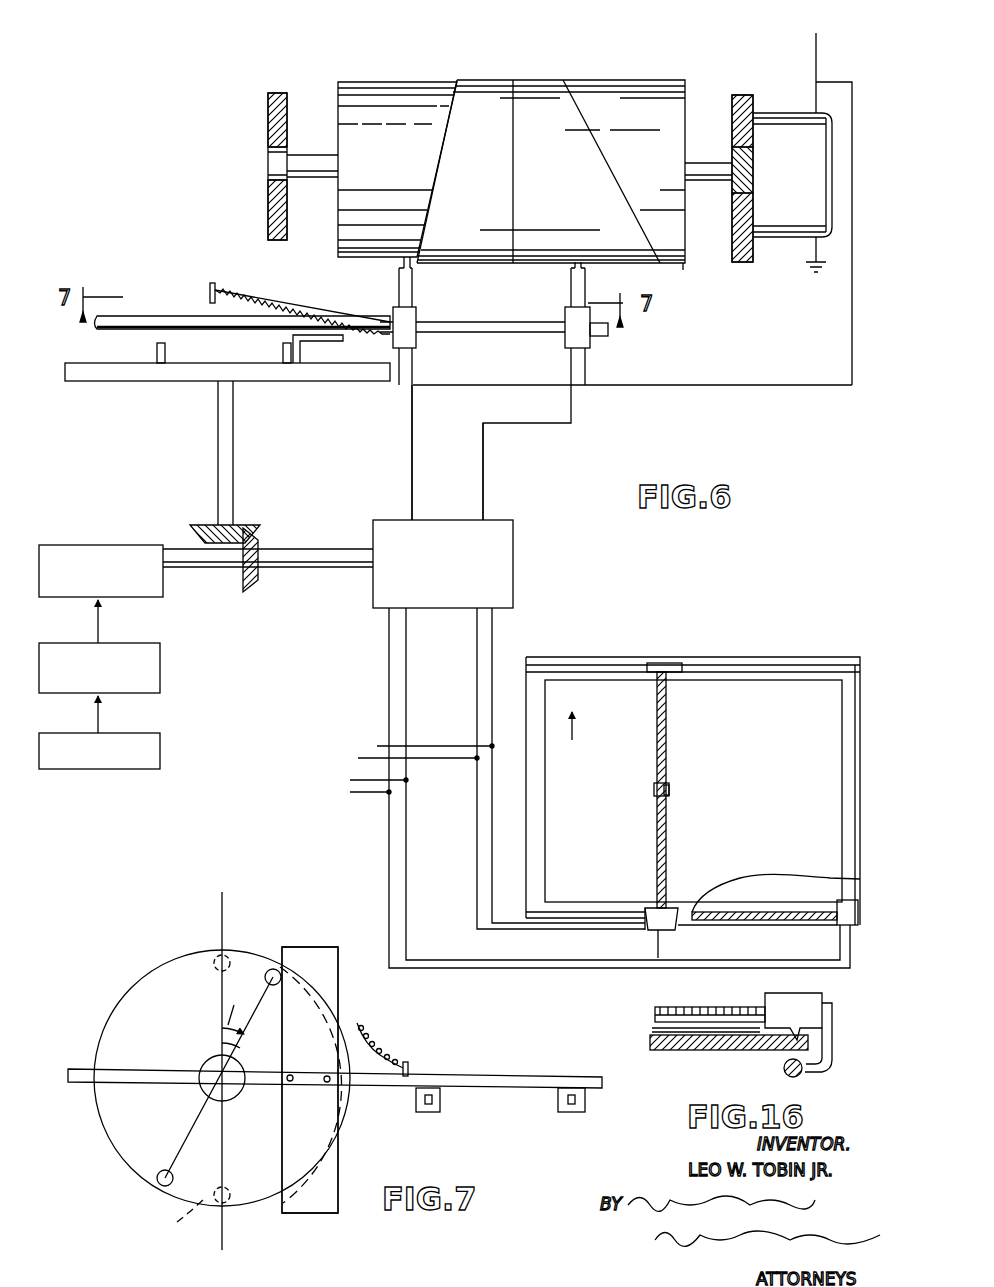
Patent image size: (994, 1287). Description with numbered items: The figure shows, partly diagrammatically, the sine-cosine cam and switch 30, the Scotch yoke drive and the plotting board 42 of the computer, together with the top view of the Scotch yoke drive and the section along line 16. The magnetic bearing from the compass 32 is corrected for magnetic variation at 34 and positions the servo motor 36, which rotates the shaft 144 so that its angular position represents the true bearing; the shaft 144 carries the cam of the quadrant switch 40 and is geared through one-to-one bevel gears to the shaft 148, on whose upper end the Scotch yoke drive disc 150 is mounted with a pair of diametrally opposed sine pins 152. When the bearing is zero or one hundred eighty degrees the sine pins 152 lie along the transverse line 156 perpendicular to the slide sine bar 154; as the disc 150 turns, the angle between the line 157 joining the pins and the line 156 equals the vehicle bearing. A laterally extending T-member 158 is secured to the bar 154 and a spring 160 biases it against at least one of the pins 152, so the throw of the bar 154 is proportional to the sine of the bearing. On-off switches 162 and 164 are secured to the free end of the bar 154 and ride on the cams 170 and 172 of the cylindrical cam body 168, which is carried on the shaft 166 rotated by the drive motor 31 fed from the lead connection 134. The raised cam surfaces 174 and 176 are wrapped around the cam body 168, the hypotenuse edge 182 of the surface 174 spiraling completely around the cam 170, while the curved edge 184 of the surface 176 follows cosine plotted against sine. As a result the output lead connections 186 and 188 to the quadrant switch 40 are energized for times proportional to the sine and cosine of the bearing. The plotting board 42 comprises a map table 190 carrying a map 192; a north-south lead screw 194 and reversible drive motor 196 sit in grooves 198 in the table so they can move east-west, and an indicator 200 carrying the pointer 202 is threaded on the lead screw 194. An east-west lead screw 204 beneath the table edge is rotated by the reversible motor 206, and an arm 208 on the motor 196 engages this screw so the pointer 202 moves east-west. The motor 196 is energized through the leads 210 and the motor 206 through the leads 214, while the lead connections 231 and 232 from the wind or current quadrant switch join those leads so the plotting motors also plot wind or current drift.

In FIG. 6, the sine-cosine cam and switch 30 is at (208, 165).
In FIG. 6, the drive motor 31 is at (770, 113).
In FIG. 6, the compass 32 is at (160, 757).
In FIG. 6, the magnetic variation correction 34 is at (160, 683).
In FIG. 6, the servo motor 36 is at (163, 590).
In FIG. 6, the quadrant switch 40 is at (513, 563).
In FIG. 6, the plotting board 42 is at (788, 652).
In FIG. 6, the section line 16— 16 is at (655, 857).
In FIG. 6, the lead connection 134 is at (816, 50).
In FIG. 6, the shaft 144 is at (297, 552).
In FIG. 6, the shaft 148 is at (236, 442).
In FIG. 6, the Scotch yoke drive disc 150 is at (158, 378).
In FIG. 7, the Scotch yoke drive disc 150 is at (135, 988).
In FIG. 6, the sine pins 152 is at (281, 350).
In FIG. 7, the sine pins 152 is at (272, 968).
In FIG. 6, the slide sine bar 154 is at (163, 316).
In FIG. 7, the slide sine bar 154 is at (86, 1082).
In FIG. 7, the transverse line 156 is at (224, 910).
In FIG. 7, the line joining pins 157 is at (222, 1037).
In FIG. 6, the T-member 158 is at (310, 338).
In FIG. 7, the T-member 158 is at (320, 955).
In FIG. 6, the spring 160 is at (307, 305).
In FIG. 7, the spring 160 is at (375, 1042).
In FIG. 6, the on-off switch 162 is at (416, 312).
In FIG. 7, the on-off switch 162 is at (440, 1110).
In FIG. 6, the on-off switch 164 is at (590, 346).
In FIG. 7, the on-off switch 164 is at (585, 1110).
In FIG. 6, the shaft 166 is at (698, 166).
In FIG. 6, the cylindrical cam body 168 is at (683, 265).
In FIG. 6, the cam 170 is at (517, 60).
In FIG. 6, the cam 172 is at (685, 60).
In FIG. 6, the raised cam surface 174 is at (478, 171).
In FIG. 6, the raised cam surface 176 is at (560, 211).
In FIG. 6, the hypotenuse edge 182 is at (450, 130).
In FIG. 6, the slant boundary 184 is at (605, 146).
In FIG. 6, the output lead connection 186 is at (411, 436).
In FIG. 6, the output lead connection 188 is at (484, 472).
In FIG. 6, the map or chart table 190 is at (856, 708).
In FIG. 16, the map or chart table 190 is at (650, 1040).
In FIG. 6, the map 192 is at (693, 791).
In FIG. 16, the map 192 is at (652, 1028).
In FIG. 6, the north-south oriented lead screw 194 is at (657, 740).
In FIG. 16, the north-south oriented lead screw 194 is at (672, 1010).
In FIG. 6, the reversible drive motor 196 is at (680, 920).
In FIG. 16, the reversible drive motor 196 is at (810, 1000).
In FIG. 6, the grooves 198 is at (733, 640).
In FIG. 16, the grooves 198 is at (728, 1068).
In FIG. 6, the indicator 200 is at (654, 791).
In FIG. 6, the pointer 202 is at (669, 787).
In FIG. 6, the east-west oriented lead screw 204 is at (762, 920).
In FIG. 16, the east-west oriented lead screw 204 is at (800, 1075).
In FIG. 6, the reversible drive motor 206 is at (858, 912).
In FIG. 6, the arm 208 is at (665, 935).
In FIG. 16, the arm 208 is at (833, 1043).
In FIG. 6, the leads 210 is at (492, 648).
In FIG. 6, the leads 214 is at (389, 676).
In FIG. 6, the conductors 231 is at (375, 792).
In FIG. 6, the lead connections 232 is at (368, 756).